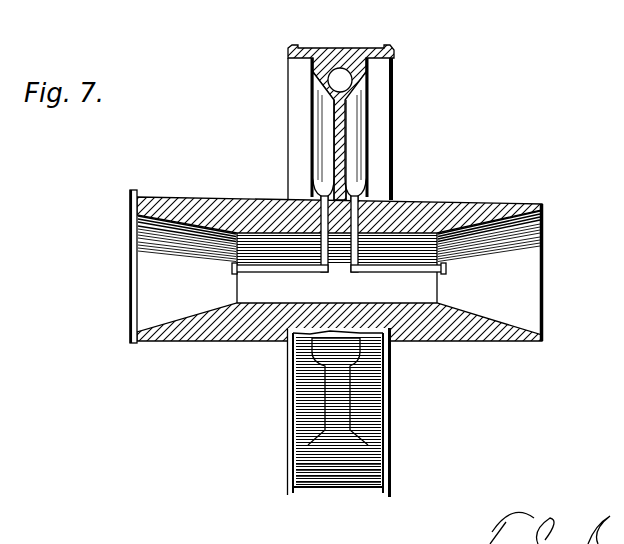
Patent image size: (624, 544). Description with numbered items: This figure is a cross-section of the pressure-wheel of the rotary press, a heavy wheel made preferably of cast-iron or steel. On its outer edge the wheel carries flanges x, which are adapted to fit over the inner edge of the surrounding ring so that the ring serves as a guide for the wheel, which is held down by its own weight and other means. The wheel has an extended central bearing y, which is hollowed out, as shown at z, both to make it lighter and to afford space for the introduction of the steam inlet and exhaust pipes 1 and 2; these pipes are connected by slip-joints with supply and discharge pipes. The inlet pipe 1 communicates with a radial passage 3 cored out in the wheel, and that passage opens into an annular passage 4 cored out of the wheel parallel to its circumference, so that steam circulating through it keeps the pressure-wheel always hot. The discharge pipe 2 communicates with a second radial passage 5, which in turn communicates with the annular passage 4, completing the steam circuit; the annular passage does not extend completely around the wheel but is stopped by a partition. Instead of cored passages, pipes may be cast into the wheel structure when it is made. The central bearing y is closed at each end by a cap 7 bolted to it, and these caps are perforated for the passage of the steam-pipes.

The steam inlet pipe 1 is at (280, 246).
The steam exhaust pipe 2 is at (398, 250).
The radial passage 3 is at (343, 140).
The annular passage 4 is at (348, 80).
The radial passage 5 is at (392, 198).
The cap 7 is at (130, 250).
The flanges x is at (298, 45).
The central bearing y is at (457, 203).
The hollow of the central bearing z is at (528, 286).